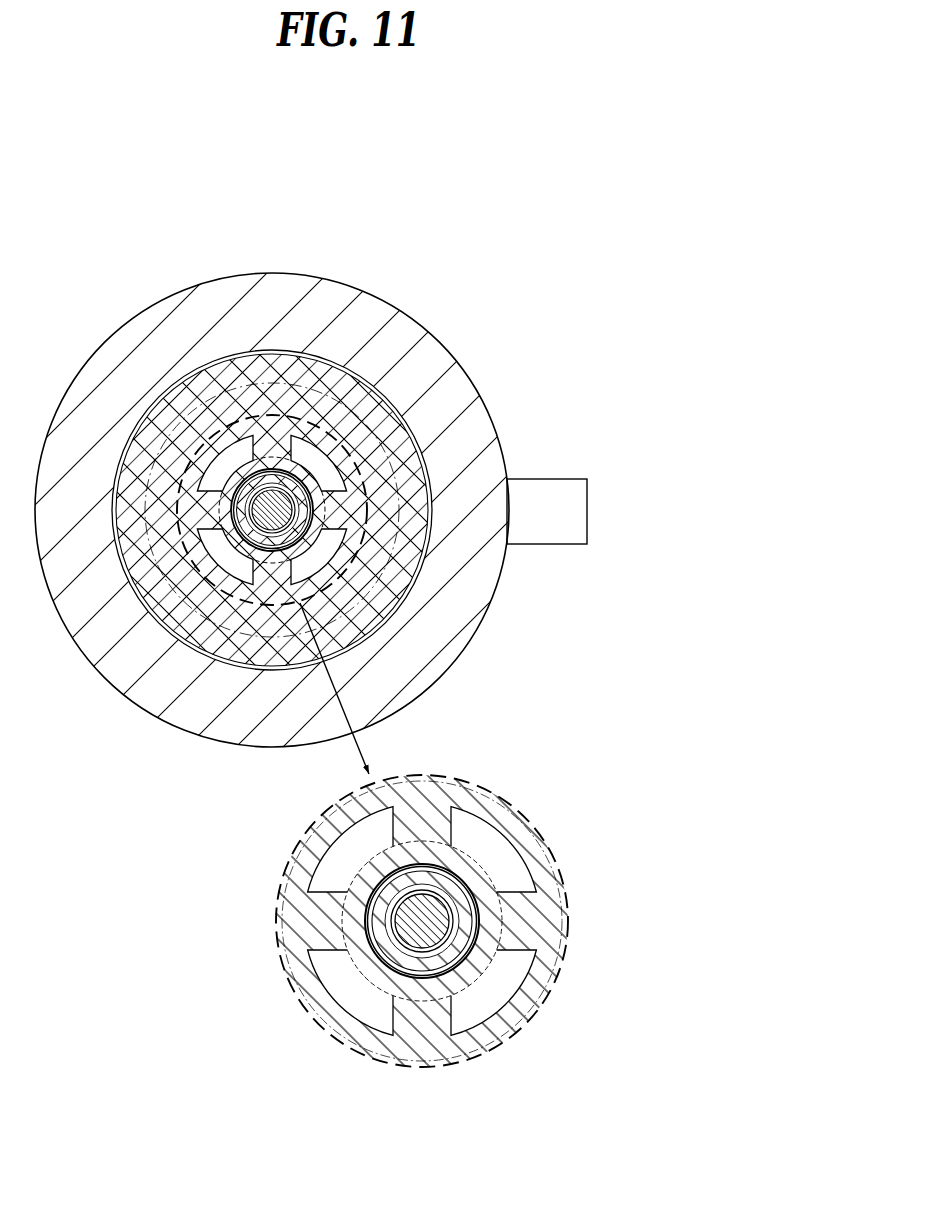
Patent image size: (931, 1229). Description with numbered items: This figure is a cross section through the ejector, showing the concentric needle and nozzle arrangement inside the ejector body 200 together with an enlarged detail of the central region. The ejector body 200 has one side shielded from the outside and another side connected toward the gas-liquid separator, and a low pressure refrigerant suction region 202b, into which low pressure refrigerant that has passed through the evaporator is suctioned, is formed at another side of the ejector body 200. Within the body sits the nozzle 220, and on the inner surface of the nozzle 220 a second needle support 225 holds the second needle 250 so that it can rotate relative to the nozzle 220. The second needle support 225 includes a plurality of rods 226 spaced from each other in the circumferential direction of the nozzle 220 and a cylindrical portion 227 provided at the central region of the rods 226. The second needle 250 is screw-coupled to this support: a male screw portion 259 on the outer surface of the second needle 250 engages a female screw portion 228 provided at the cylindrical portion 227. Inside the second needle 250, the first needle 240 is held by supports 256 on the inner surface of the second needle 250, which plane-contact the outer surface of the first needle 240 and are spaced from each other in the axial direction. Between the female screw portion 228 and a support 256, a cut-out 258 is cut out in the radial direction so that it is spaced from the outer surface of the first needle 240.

The ejector body 200 is at (334, 273).
The nozzle 220 is at (374, 396).
The low pressure refrigerant suction region 202b is at (561, 478).
The second needle support 225 is at (462, 821).
The rods 226 is at (350, 543).
The cylindrical portion 227 is at (372, 868).
The female screw portion 228 is at (458, 888).
The first needle 240 is at (248, 536).
The second needle 250 is at (378, 923).
The supports 256 is at (450, 958).
The cut-out 258 is at (455, 942).
The male screw portion 259 is at (500, 887).